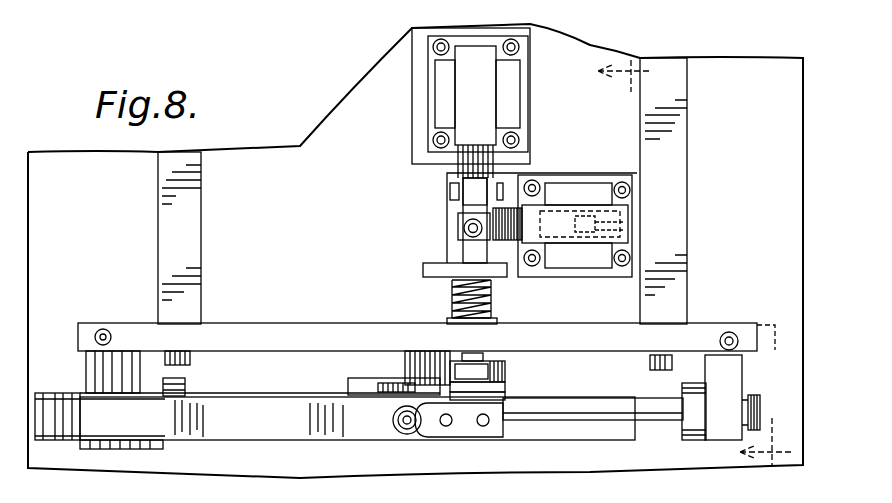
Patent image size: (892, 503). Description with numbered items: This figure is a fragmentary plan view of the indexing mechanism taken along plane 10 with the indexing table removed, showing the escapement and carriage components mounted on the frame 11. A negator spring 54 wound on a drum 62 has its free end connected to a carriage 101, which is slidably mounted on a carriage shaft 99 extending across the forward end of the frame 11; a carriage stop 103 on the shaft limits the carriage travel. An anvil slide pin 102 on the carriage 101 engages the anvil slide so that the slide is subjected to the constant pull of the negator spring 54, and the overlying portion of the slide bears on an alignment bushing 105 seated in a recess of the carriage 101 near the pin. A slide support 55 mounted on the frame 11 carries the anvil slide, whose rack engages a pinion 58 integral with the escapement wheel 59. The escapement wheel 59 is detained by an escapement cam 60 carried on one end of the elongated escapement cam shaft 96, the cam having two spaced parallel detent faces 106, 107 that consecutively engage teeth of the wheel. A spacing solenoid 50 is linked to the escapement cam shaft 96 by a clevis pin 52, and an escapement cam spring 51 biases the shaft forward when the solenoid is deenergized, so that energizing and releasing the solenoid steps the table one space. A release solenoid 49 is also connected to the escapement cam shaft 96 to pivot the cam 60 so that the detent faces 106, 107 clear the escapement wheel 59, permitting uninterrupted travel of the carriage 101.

The section line 10 is at (698, 261).
The frame 11 is at (687, 114).
The release solenoid 49 is at (578, 190).
The spacing solenoid 50 is at (440, 105).
The escapement cam spring 51 is at (493, 297).
The clevis pin 52 is at (447, 198).
The negator spring 54 is at (243, 437).
The slide support 55 is at (276, 332).
The pinion 58 is at (421, 353).
The escapement wheel 59 is at (378, 385).
The escapement cam 60 is at (505, 377).
The drum 62 is at (48, 393).
The escapement cam shaft 96 is at (478, 358).
The carriage shaft 99 is at (635, 420).
The carriage 101 is at (460, 430).
The anvil slide pin 102 is at (487, 425).
The carriage stop 103 is at (185, 387).
The alignment bushing 105 is at (440, 434).
The detent face 106 is at (508, 394).
The detent face 107 is at (510, 402).